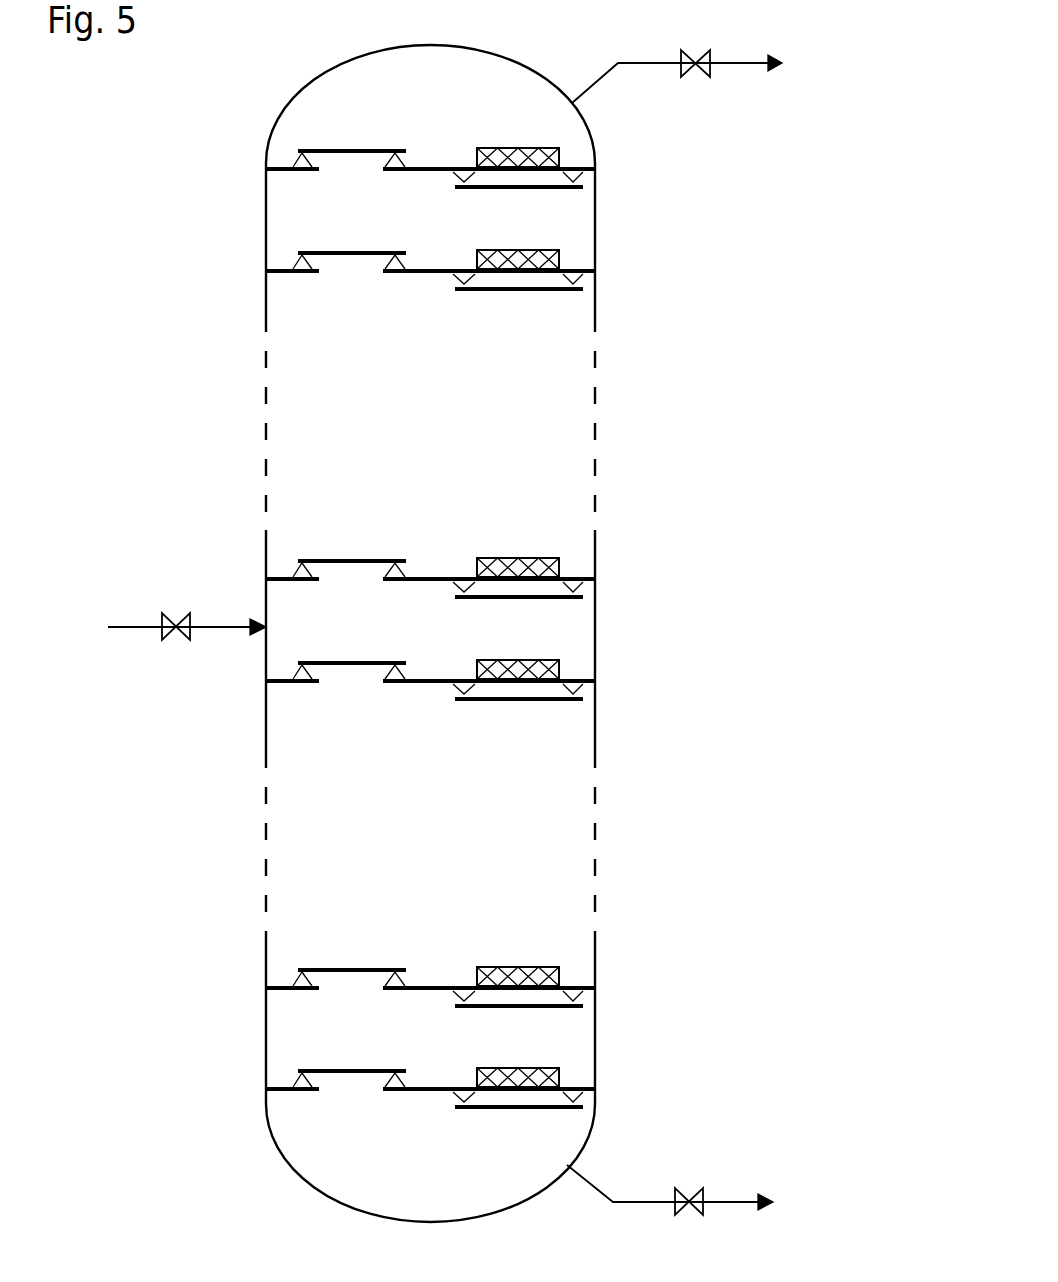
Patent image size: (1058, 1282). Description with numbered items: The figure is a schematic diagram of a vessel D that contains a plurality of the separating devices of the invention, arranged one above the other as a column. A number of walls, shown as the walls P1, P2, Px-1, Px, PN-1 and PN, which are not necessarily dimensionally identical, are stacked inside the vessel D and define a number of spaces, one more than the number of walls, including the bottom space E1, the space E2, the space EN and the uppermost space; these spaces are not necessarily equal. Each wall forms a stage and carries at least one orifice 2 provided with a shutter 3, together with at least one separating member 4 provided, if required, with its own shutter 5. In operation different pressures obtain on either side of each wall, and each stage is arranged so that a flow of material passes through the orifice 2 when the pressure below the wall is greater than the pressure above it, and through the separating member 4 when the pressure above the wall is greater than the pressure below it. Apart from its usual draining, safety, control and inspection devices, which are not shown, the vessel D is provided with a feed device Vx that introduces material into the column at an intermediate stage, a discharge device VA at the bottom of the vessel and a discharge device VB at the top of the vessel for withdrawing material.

The vessel D is at (266, 140).
The orifice 2 is at (280, 172).
The shutter 3 is at (343, 150).
The separating member 4 is at (540, 147).
The shutter 5 is at (540, 189).
The wall PN is at (584, 168).
The wall PN-1 is at (584, 270).
The wall of stage X Px is at (584, 578).
The wall Px-1 is at (584, 680).
The wall P2 is at (584, 987).
The wall P1 is at (584, 1088).
The space EN is at (317, 205).
The space E2 is at (300, 1027).
The space E1 is at (340, 1175).
The discharge device VB is at (690, 78).
The feed device Vx is at (167, 613).
The discharge device VA is at (688, 1190).